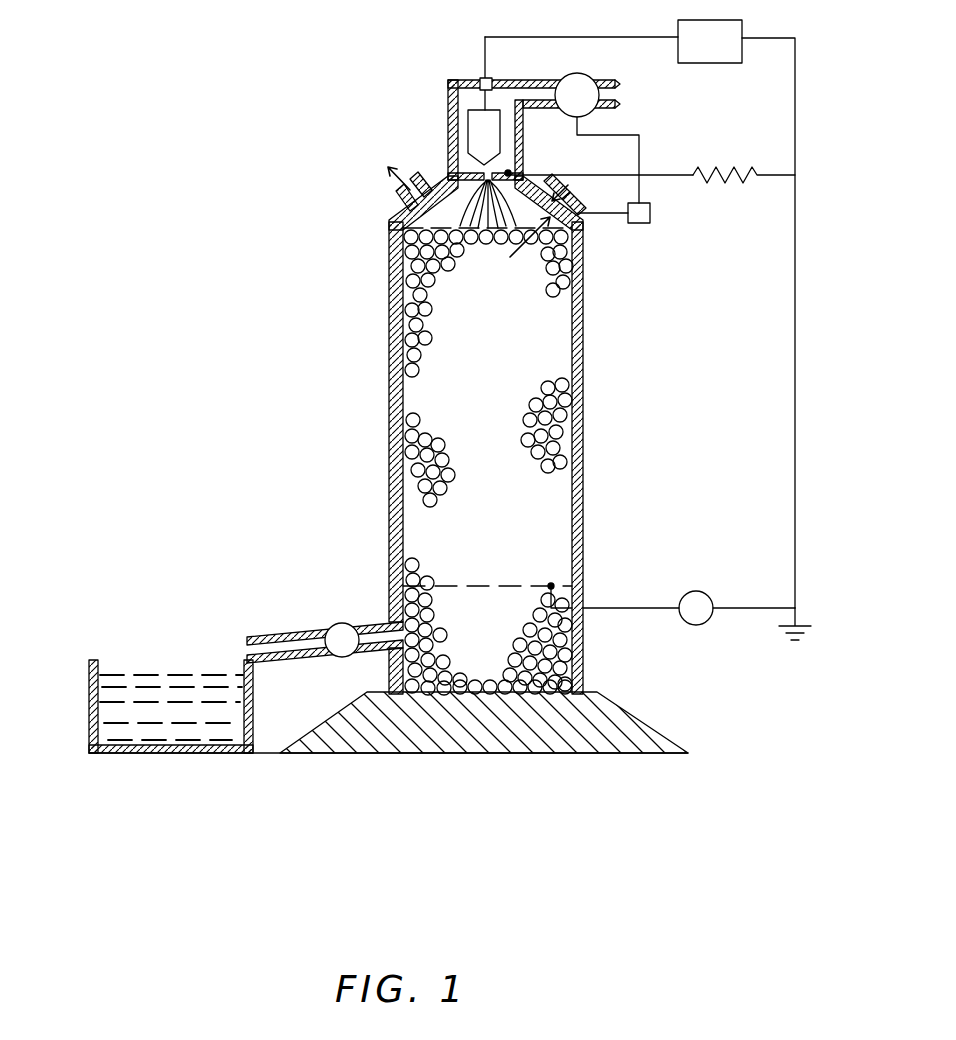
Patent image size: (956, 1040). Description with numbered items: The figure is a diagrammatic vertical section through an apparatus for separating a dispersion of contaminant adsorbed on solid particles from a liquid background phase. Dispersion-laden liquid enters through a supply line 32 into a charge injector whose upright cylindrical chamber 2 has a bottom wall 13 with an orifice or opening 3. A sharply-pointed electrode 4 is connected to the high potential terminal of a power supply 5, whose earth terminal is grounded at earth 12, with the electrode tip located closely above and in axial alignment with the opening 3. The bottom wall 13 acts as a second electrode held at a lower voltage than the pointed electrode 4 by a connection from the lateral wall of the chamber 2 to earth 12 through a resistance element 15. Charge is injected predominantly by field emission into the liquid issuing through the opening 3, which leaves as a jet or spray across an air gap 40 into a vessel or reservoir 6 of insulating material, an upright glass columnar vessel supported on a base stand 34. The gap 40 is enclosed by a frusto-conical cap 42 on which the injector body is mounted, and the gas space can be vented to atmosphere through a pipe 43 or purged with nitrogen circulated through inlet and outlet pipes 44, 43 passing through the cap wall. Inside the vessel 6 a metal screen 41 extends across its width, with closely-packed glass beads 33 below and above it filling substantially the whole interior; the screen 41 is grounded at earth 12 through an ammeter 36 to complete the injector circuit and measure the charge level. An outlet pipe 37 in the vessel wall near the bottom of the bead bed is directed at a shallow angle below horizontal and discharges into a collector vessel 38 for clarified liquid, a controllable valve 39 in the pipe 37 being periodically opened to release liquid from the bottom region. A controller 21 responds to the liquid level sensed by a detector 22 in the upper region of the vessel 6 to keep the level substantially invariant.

The chamber 2 is at (523, 152).
The orifice or opening 3 is at (483, 192).
The sharply-pointed electrode 4 is at (478, 140).
The power supply 5 is at (640, 314).
The vessel or reservoir 6 is at (584, 386).
The earth 12 is at (800, 622).
The bottom wall 13 is at (512, 174).
The resistance element 15 is at (724, 180).
The controller 21 is at (650, 216).
The detector 22 is at (488, 462).
The supply line 32 is at (535, 102).
The beads 33 is at (584, 268).
The base stand 34 is at (610, 725).
The ammeter 36 is at (700, 590).
The outlet pipe 37 is at (290, 634).
The collector vessel 38 is at (89, 712).
The controllable valve 39 is at (332, 656).
The air gap 40 is at (527, 228).
The metal screen 41 is at (480, 586).
The frusto-conical cap 42 is at (390, 214).
The outlet pipe 43 is at (398, 193).
The inlet pipe 44 is at (574, 192).